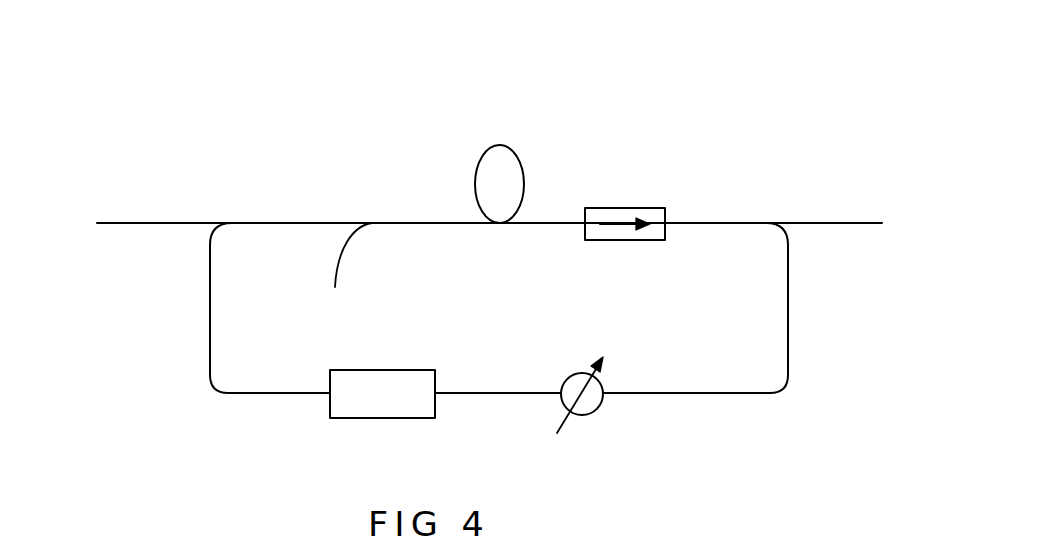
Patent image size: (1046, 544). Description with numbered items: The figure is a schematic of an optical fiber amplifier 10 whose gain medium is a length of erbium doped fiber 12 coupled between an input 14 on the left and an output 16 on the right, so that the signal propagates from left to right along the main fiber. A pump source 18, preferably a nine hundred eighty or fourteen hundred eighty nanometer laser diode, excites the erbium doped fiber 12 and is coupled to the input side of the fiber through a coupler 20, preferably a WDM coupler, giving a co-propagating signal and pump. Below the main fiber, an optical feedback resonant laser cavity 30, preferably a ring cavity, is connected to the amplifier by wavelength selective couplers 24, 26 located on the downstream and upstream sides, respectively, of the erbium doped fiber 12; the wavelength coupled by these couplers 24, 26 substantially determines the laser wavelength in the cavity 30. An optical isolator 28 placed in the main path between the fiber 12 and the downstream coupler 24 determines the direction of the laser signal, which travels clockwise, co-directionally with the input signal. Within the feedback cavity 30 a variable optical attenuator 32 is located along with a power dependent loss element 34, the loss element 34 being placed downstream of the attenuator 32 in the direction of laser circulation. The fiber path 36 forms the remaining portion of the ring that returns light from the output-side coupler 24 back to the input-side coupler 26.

The optical fiber amplifier 10 is at (663, 77).
The erbium doped fiber 12 is at (513, 159).
The input 14 is at (125, 199).
The output 16 is at (856, 190).
The pump source 18 is at (357, 275).
The WDM coupler 20 is at (369, 215).
The wavelength selective coupler 24 is at (768, 225).
The wavelength selective coupler 26 is at (226, 222).
The optical isolator 28 is at (634, 200).
The optical feedback resonant laser cavity 30 is at (802, 353).
The variable optical attenuator 32 is at (617, 396).
The power dependent loss element 34 is at (445, 411).
The feedback fiber path 36 is at (191, 357).